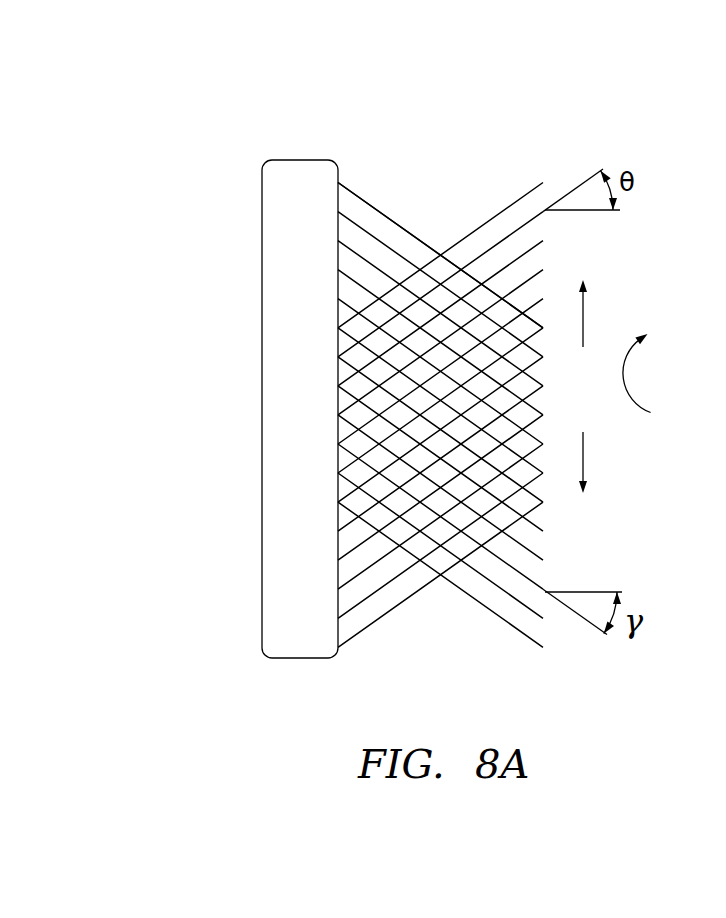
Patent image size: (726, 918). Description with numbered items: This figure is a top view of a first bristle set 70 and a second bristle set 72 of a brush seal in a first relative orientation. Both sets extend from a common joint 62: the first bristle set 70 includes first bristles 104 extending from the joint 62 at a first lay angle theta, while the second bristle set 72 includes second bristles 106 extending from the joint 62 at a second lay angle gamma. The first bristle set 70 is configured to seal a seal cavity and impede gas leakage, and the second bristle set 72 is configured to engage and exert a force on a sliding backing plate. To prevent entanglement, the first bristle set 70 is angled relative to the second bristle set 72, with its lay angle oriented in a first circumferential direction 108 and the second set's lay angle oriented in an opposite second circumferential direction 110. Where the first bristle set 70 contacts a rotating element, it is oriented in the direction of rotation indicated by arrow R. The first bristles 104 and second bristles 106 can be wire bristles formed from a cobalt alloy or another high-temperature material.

The joint 62 is at (272, 240).
The first bristle set 70 is at (492, 392).
The second bristle set 72 is at (374, 194).
The first bristles 104 is at (530, 221).
The second bristles 106 is at (530, 581).
The first circumferential direction 108 is at (583, 318).
The second circumferential direction 110 is at (583, 455).
The arrow R is at (626, 378).